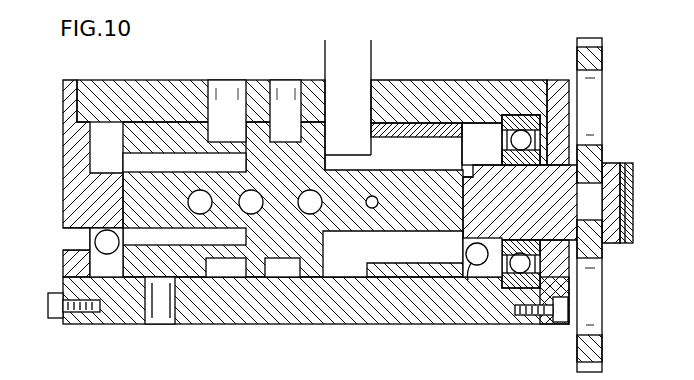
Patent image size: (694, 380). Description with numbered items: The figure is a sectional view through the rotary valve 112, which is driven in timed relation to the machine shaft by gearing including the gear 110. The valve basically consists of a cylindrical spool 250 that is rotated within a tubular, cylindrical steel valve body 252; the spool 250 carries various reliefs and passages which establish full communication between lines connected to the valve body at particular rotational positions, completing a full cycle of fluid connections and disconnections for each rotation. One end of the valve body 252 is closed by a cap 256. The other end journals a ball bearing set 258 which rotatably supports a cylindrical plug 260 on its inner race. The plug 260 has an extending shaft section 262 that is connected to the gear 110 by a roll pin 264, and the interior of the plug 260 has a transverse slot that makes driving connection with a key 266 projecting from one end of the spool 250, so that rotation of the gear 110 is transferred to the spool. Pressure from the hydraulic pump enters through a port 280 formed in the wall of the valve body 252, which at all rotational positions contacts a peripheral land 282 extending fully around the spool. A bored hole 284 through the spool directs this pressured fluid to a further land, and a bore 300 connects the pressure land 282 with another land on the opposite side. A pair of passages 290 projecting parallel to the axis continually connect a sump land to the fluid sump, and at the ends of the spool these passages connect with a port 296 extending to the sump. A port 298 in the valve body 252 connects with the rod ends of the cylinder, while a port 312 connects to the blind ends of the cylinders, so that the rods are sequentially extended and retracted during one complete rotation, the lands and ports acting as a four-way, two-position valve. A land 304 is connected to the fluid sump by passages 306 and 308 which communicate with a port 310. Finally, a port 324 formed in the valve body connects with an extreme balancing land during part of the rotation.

The gear 110 is at (598, 50).
The rotary valve 112 is at (474, 51).
The cylindrical spool 250 is at (162, 112).
The tubular valve body 252 is at (417, 93).
The cap 256 is at (70, 193).
The ball bearing set 258 is at (515, 110).
The cylindrical plug 260 is at (498, 167).
The shaft section 262 is at (607, 163).
The roll pin 264 is at (634, 206).
The key 266 is at (483, 197).
The port 280 is at (272, 117).
The peripheral land 282 is at (300, 133).
The bored hole 284 is at (260, 190).
The passages 290 is at (137, 158).
The port 296 is at (63, 240).
The port 298 is at (215, 85).
The bore 300 is at (322, 193).
The land 304 is at (372, 150).
The passage 306 is at (462, 226).
The passage 308 is at (367, 250).
The port 310 is at (477, 280).
The port 312 is at (372, 90).
The port 324 is at (159, 318).